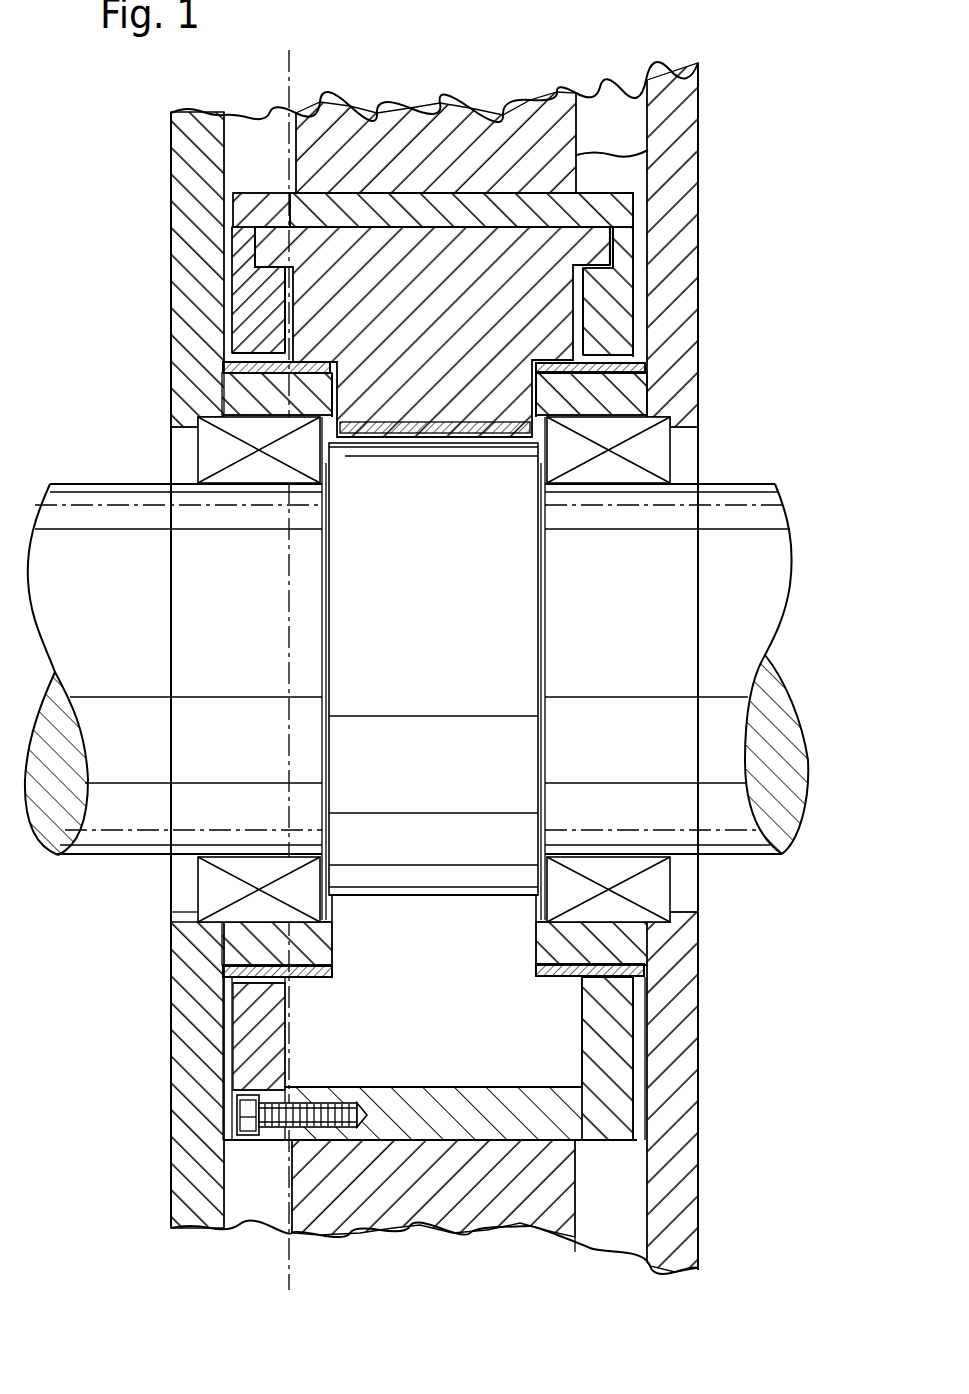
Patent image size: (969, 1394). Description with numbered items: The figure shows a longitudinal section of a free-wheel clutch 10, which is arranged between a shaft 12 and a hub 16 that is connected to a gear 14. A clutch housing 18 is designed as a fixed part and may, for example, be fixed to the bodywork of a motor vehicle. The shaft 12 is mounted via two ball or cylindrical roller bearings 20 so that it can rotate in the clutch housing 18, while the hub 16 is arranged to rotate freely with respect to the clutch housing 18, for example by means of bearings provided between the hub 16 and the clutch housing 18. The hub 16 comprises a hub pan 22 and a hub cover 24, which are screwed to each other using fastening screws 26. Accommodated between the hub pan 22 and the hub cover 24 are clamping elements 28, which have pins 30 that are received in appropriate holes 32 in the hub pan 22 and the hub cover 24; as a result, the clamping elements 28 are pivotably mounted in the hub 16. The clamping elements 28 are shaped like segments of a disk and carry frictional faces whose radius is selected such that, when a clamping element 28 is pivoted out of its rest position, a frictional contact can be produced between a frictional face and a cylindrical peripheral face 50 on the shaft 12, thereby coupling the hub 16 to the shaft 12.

The free-wheel clutch 10 is at (482, 668).
The shaft 12 is at (113, 803).
The gear 14 is at (648, 152).
The hub 16 is at (635, 208).
The clutch housing 18 is at (698, 247).
The ball or cylindrical roller bearings 20 is at (218, 445).
The hub pan 22 is at (613, 1042).
The hub cover 24 is at (248, 1027).
The fastening screws 26 is at (265, 1108).
The clamping elements 28 is at (363, 317).
The pins 30 is at (270, 248).
The holes 32 is at (253, 237).
The cylindrical peripheral face 50 is at (350, 825).